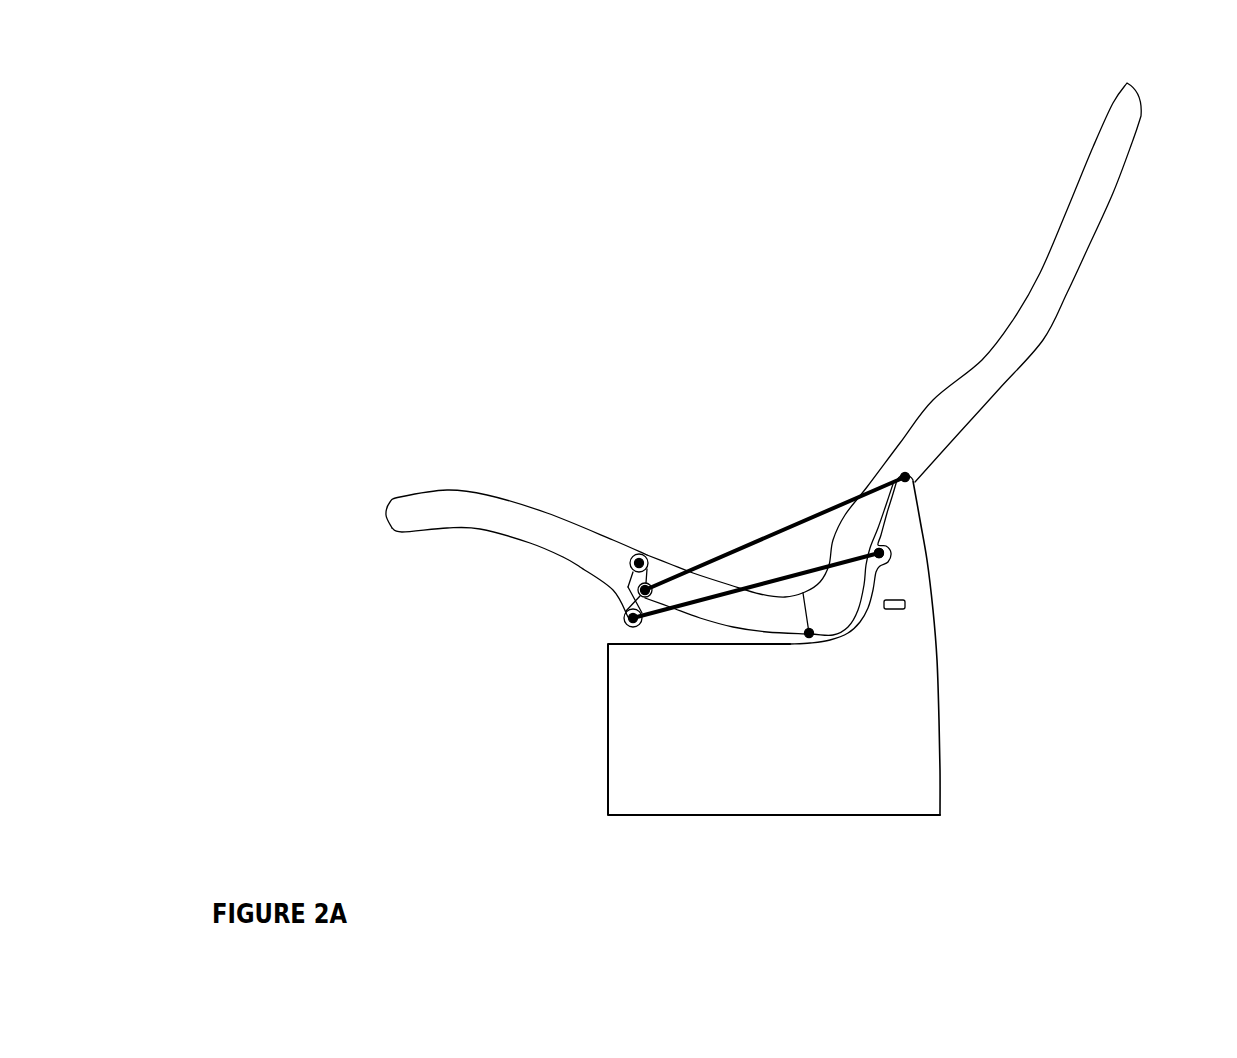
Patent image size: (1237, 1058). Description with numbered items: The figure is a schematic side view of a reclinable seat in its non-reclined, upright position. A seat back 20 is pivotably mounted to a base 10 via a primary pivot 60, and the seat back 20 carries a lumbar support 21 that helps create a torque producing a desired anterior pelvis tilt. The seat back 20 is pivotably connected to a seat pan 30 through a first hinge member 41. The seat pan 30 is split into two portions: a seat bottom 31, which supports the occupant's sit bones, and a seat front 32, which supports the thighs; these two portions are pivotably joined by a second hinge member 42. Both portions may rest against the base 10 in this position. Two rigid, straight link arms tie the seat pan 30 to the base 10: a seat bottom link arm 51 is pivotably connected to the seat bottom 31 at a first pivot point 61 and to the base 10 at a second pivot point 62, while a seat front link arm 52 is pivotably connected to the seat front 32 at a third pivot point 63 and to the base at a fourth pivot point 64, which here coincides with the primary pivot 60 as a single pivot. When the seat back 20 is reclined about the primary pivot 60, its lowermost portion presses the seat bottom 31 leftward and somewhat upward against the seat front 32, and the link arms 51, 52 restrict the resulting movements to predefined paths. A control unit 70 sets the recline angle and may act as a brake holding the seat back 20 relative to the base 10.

The base 10 is at (942, 720).
The seat back 20 is at (1080, 260).
The lumbar support 21 is at (870, 474).
The seat pan 30 is at (685, 525).
The seat bottom 31 is at (767, 633).
The seat front 32 is at (485, 527).
The first hinge member 41 is at (810, 634).
The second hinge member 42 is at (640, 550).
The seat bottom link arm 51 is at (783, 528).
The seat front link arm 52 is at (700, 600).
The primary pivot 60 is at (891, 562).
The first pivot point 61 is at (650, 583).
The second pivot point 62 is at (915, 485).
The third pivot point 63 is at (630, 620).
The fourth pivot point 64 is at (983, 548).
The control unit 70 is at (893, 609).